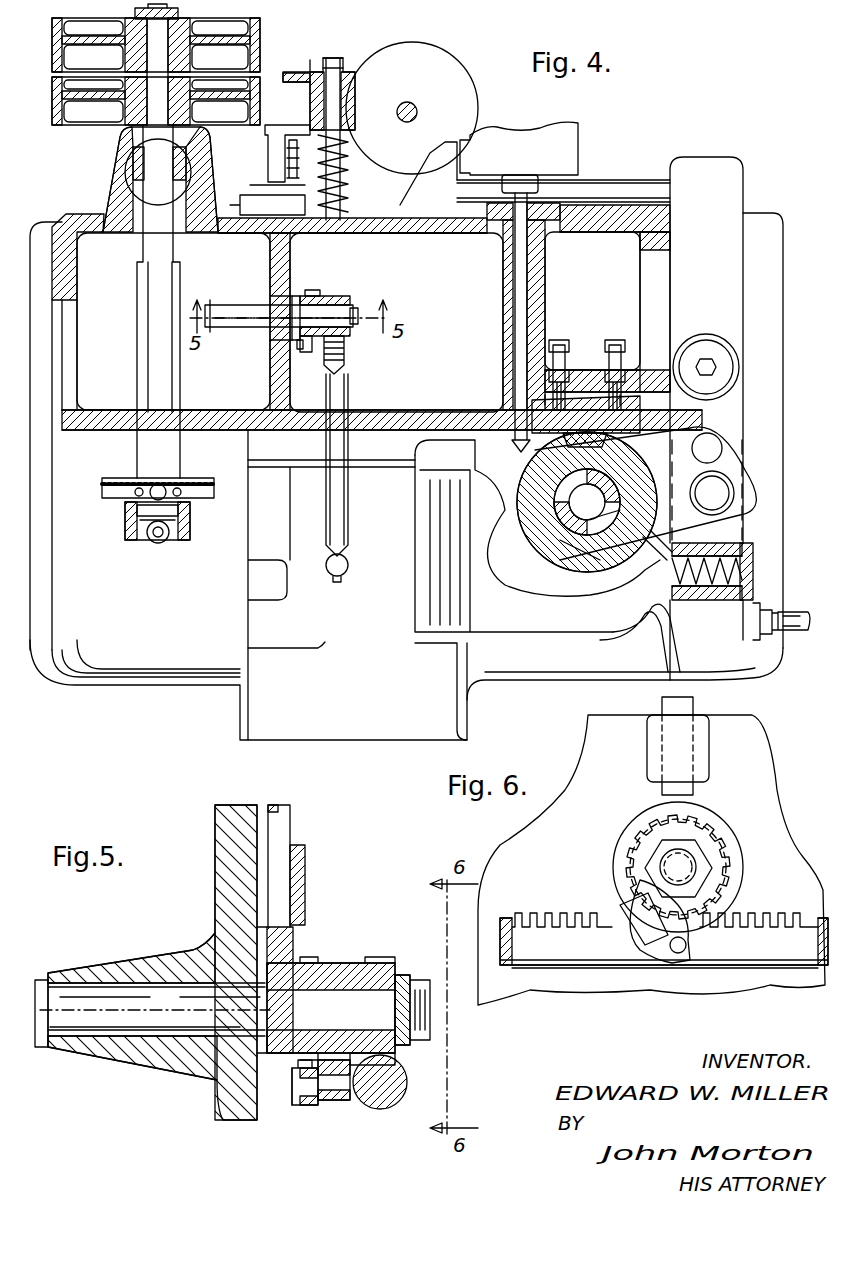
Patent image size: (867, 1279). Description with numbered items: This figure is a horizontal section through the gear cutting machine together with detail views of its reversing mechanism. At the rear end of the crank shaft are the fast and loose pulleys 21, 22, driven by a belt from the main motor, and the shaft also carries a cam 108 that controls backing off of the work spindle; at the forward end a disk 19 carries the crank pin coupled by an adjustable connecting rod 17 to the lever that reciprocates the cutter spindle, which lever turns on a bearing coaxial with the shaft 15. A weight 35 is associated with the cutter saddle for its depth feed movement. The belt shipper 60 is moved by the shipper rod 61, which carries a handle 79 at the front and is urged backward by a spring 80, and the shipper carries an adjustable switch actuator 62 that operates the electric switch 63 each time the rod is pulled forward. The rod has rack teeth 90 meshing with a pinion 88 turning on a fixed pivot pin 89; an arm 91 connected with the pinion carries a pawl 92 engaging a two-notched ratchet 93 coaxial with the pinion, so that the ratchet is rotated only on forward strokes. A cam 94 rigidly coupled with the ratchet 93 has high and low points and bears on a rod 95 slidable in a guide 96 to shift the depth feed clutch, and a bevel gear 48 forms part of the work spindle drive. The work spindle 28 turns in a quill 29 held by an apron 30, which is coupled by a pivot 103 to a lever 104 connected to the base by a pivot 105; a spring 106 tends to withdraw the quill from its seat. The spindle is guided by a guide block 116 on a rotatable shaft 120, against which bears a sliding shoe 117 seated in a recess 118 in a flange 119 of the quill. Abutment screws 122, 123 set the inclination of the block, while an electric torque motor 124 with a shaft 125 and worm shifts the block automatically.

In FIG. 4, the loose pulley 22 is at (58, 50).
In FIG. 4, the fast pulley 21 is at (58, 110).
In FIG. 4, the cam 108 is at (138, 160).
In FIG. 4, the belt shipper 60 is at (292, 72).
In FIG. 4, the spring 80 is at (350, 156).
In FIG. 4, the switch actuator 62 is at (283, 176).
In FIG. 4, the electric switch 63 is at (258, 185).
In FIG. 4, the weight 35 is at (478, 106).
In FIG. 4, the electric torque motor 124 is at (576, 145).
In FIG. 4, the shaft 15 is at (598, 182).
In FIG. 4, the lever 104 is at (732, 427).
In FIG. 4, the pivot 105 is at (714, 368).
In FIG. 4, the shaft 125 is at (540, 256).
In FIG. 4, the abutment screw 122 is at (557, 340).
In FIG. 4, the abutment screw 123 is at (614, 340).
In FIG. 4, the shaft 120 is at (586, 392).
In FIG. 4, the cam 94 is at (292, 300).
In FIG. 5, the cam 94 is at (295, 935).
In FIG. 6, the cam 94 is at (705, 808).
In FIG. 4, the ratchet 93 is at (310, 290).
In FIG. 5, the ratchet 93 is at (310, 966).
In FIG. 6, the ratchet 93 is at (720, 862).
In FIG. 4, the pinion 88 is at (330, 300).
In FIG. 5, the pinion 88 is at (393, 960).
In FIG. 6, the pinion 88 is at (710, 828).
In FIG. 4, the pivot pin 89 is at (360, 305).
In FIG. 5, the pivot pin 89 is at (428, 1020).
In FIG. 6, the pivot pin 89 is at (658, 860).
In FIG. 4, the rack teeth 90 is at (346, 350).
In FIG. 5, the rack teeth 90 is at (398, 1060).
In FIG. 6, the rack teeth 90 is at (735, 918).
In FIG. 4, the pawl 92 is at (298, 352).
In FIG. 5, the pawl 92 is at (308, 1108).
In FIG. 6, the pawl 92 is at (620, 905).
In FIG. 4, the handle 79 is at (348, 570).
In FIG. 4, the disk 19 is at (110, 500).
In FIG. 4, the connecting rod 17 is at (150, 542).
In FIG. 4, the recess 118 is at (545, 448).
In FIG. 4, the work spindle 28 is at (562, 490).
In FIG. 4, the sliding shoe 117 is at (612, 438).
In FIG. 4, the guide block 116 is at (640, 412).
In FIG. 4, the pivot 103 is at (732, 493).
In FIG. 4, the quill 29 is at (540, 548).
In FIG. 4, the flange 119 is at (540, 560).
In FIG. 4, the apron 30 is at (660, 550).
In FIG. 4, the spring 106 is at (700, 600).
In FIG. 5, the rod 95 is at (300, 835).
In FIG. 6, the rod 95 is at (693, 705).
In FIG. 5, the guide 96 is at (305, 880).
In FIG. 6, the guide 96 is at (709, 760).
In FIG. 5, the bevel gear 48 is at (293, 1100).
In FIG. 5, the arm 91 is at (330, 1105).
In FIG. 6, the arm 91 is at (630, 943).
In FIG. 5, the shipper rod 61 is at (382, 1105).
In FIG. 6, the shipper rod 61 is at (770, 968).